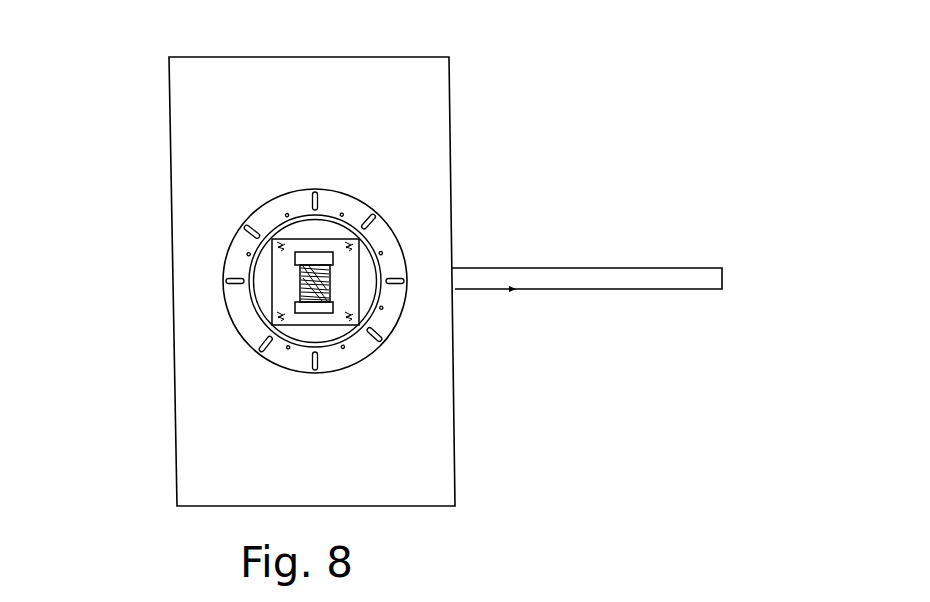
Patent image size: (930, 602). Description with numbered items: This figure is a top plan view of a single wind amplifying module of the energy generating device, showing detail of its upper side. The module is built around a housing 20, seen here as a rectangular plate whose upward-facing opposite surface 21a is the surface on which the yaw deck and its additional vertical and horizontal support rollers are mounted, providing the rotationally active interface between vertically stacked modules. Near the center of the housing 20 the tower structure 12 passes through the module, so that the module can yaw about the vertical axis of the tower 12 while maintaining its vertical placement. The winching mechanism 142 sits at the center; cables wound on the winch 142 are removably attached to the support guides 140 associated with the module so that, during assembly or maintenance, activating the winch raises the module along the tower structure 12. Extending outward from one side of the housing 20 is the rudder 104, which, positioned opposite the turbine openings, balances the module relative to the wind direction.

The tower structure 12 is at (237, 301).
The housing 20 is at (406, 302).
The opposite surface 21a is at (358, 125).
The rudder 104 is at (587, 320).
The support guide 140 is at (467, 359).
The winching mechanism 142 is at (193, 168).